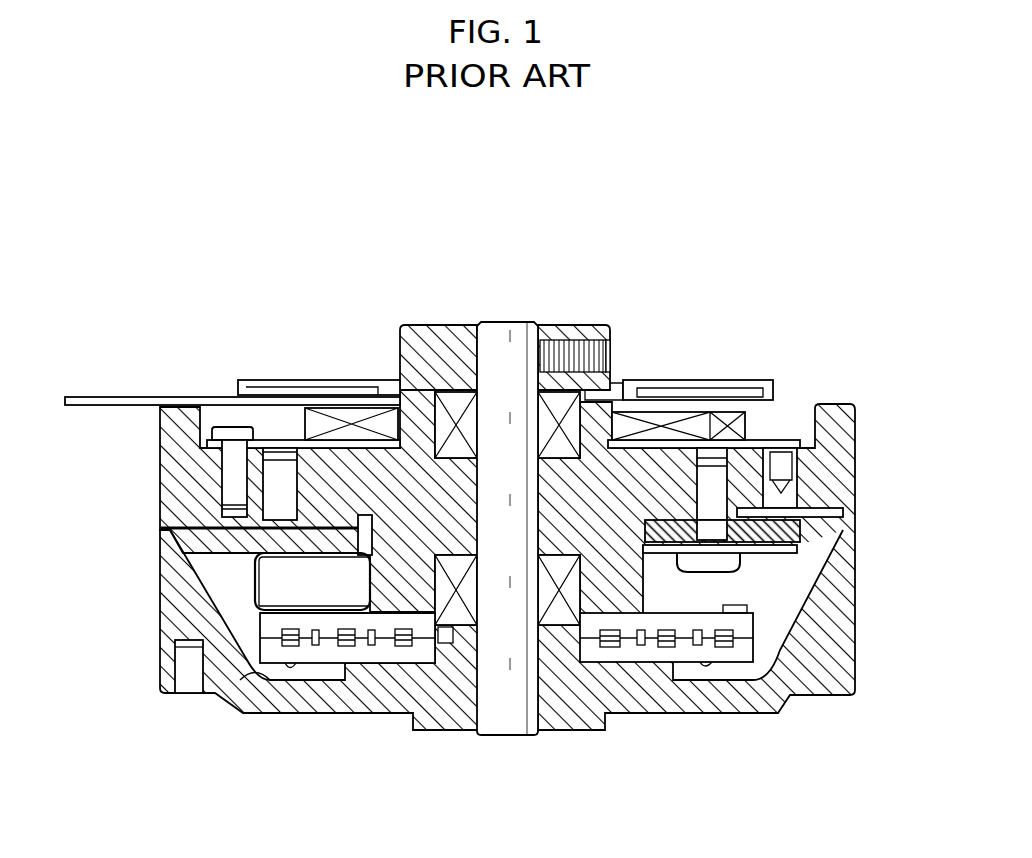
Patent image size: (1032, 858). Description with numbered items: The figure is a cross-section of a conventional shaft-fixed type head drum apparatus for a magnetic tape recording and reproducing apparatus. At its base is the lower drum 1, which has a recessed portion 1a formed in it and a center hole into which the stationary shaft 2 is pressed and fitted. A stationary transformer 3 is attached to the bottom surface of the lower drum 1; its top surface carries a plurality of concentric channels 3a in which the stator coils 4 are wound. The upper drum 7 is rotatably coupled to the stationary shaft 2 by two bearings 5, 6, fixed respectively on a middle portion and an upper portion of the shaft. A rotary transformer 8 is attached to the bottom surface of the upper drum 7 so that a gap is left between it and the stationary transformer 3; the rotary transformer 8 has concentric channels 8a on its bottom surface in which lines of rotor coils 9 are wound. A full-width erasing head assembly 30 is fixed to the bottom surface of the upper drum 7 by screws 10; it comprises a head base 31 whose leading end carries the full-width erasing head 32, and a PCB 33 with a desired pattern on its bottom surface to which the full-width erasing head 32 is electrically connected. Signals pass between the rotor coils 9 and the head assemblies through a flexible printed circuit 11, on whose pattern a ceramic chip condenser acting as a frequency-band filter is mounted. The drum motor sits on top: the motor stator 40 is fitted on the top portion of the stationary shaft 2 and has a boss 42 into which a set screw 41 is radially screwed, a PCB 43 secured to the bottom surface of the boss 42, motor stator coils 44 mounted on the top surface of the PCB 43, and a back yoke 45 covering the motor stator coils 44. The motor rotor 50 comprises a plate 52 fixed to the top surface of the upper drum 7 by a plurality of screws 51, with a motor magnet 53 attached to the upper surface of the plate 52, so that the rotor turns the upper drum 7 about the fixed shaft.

The lower drum 1 is at (170, 597).
The recessed portion 1a is at (257, 678).
The stationary shaft 2 is at (502, 723).
The stationary transformer 3 is at (707, 655).
The concentric channels 3a is at (624, 646).
The stator coils 4 is at (607, 648).
The bearing 5 is at (460, 613).
The bearing 6 is at (455, 407).
The upper drum 7 is at (162, 490).
The rotary transformer 8 is at (326, 630).
The concentric channels 8a is at (300, 614).
The rotor coils 9 is at (290, 630).
The screws 10 is at (723, 567).
The flexible printed circuit 11 is at (258, 578).
The full-width erasing head assembly 30 is at (827, 537).
The head base 31 is at (800, 490).
The full-width erasing head 32 is at (855, 514).
The PCB 33 is at (783, 540).
The motor stator 40 is at (575, 316).
The set screw 41 is at (608, 350).
The boss 42 is at (598, 330).
The PCB 43 is at (135, 396).
The motor stator coils 44 is at (341, 397).
The back yoke 45 is at (290, 388).
The motor rotor 50 is at (758, 424).
The screws 51 is at (225, 427).
The plate 52 is at (212, 442).
The motor magnet 53 is at (697, 420).